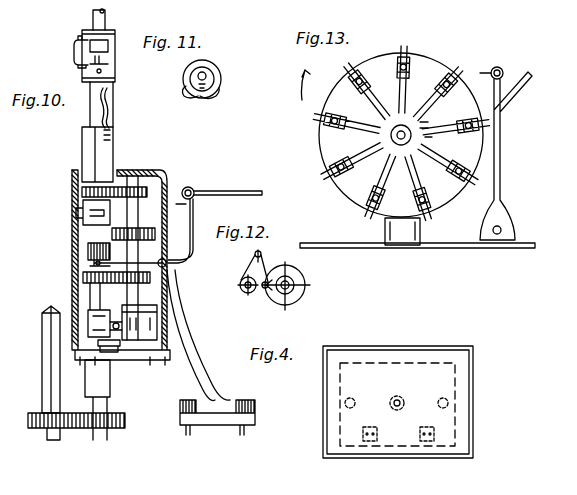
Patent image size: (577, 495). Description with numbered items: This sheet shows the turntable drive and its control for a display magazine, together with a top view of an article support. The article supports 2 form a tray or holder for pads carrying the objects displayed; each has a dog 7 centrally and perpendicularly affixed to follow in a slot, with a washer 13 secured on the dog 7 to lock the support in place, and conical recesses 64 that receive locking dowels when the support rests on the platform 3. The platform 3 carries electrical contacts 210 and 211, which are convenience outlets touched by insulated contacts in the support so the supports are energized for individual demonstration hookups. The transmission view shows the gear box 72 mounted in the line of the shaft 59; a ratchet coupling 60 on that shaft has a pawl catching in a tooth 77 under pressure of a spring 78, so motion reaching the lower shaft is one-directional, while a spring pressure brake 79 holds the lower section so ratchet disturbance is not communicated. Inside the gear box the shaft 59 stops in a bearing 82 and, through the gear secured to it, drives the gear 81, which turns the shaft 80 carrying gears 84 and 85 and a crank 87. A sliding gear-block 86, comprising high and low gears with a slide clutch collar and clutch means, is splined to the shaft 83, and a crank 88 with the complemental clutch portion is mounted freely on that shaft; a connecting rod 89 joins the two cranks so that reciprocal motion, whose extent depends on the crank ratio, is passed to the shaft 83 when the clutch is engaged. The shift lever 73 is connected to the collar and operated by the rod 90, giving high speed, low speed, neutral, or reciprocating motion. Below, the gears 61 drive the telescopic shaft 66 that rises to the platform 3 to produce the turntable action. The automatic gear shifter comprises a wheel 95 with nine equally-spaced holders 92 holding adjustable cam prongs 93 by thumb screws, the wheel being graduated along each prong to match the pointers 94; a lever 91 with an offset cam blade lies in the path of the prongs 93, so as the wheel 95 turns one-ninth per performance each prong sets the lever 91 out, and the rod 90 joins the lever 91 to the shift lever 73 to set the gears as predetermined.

In FIG. 10, the shaft 59 is at (106, 14).
In FIG. 10, the ratchet coupling 60 is at (74, 47).
In FIG. 11, the ratchet coupling 60 is at (184, 92).
In FIG. 10, the tooth 77 is at (110, 60).
In FIG. 11, the tooth 77 is at (221, 78).
In FIG. 10, the spring pressure brake 79 is at (109, 110).
In FIG. 10, the gear box 72 is at (72, 187).
In FIG. 10, the gear 81 is at (147, 190).
In FIG. 10, the shaft 80 is at (142, 258).
In FIG. 10, the bearing 82 is at (101, 212).
In FIG. 10, the gear 84 is at (134, 239).
In FIG. 10, the sliding gear-block 86 is at (86, 252).
In FIG. 10, the gear 85 is at (120, 306).
In FIG. 10, the crank 88 is at (90, 320).
In FIG. 12, the crank 88 is at (240, 282).
In FIG. 10, the crank 87 is at (118, 338).
In FIG. 12, the crank 87 is at (278, 300).
In FIG. 10, the connecting rod 89 is at (108, 352).
In FIG. 12, the connecting rod 89 is at (262, 252).
In FIG. 10, the shaft 83 is at (108, 405).
In FIG. 10, the telescopic shaft 66 is at (42, 357).
In FIG. 10, the gears 61 is at (82, 430).
In FIG. 10, the shift lever 73 is at (193, 222).
In FIG. 10, the rod 90 is at (222, 187).
In FIG. 13, the rod 90 is at (490, 66).
In FIG. 11, the spring 78 is at (216, 98).
In FIG. 13, the wheel 95 is at (446, 48).
In FIG. 13, the pointers 94 is at (398, 110).
In FIG. 13, the holders 92 is at (472, 118).
In FIG. 13, the cam prongs 93 is at (432, 137).
In FIG. 13, the lever 91 is at (508, 104).
In FIG. 4, the article supports 2 is at (323, 388).
In FIG. 4, the platform 3 is at (455, 370).
In FIG. 4, the conical recesses 64 is at (354, 400).
In FIG. 4, the washer 13 is at (402, 397).
In FIG. 4, the dog 7 is at (405, 405).
In FIG. 4, the electrical contact 211 is at (370, 442).
In FIG. 4, the electrical contact 210 is at (427, 442).